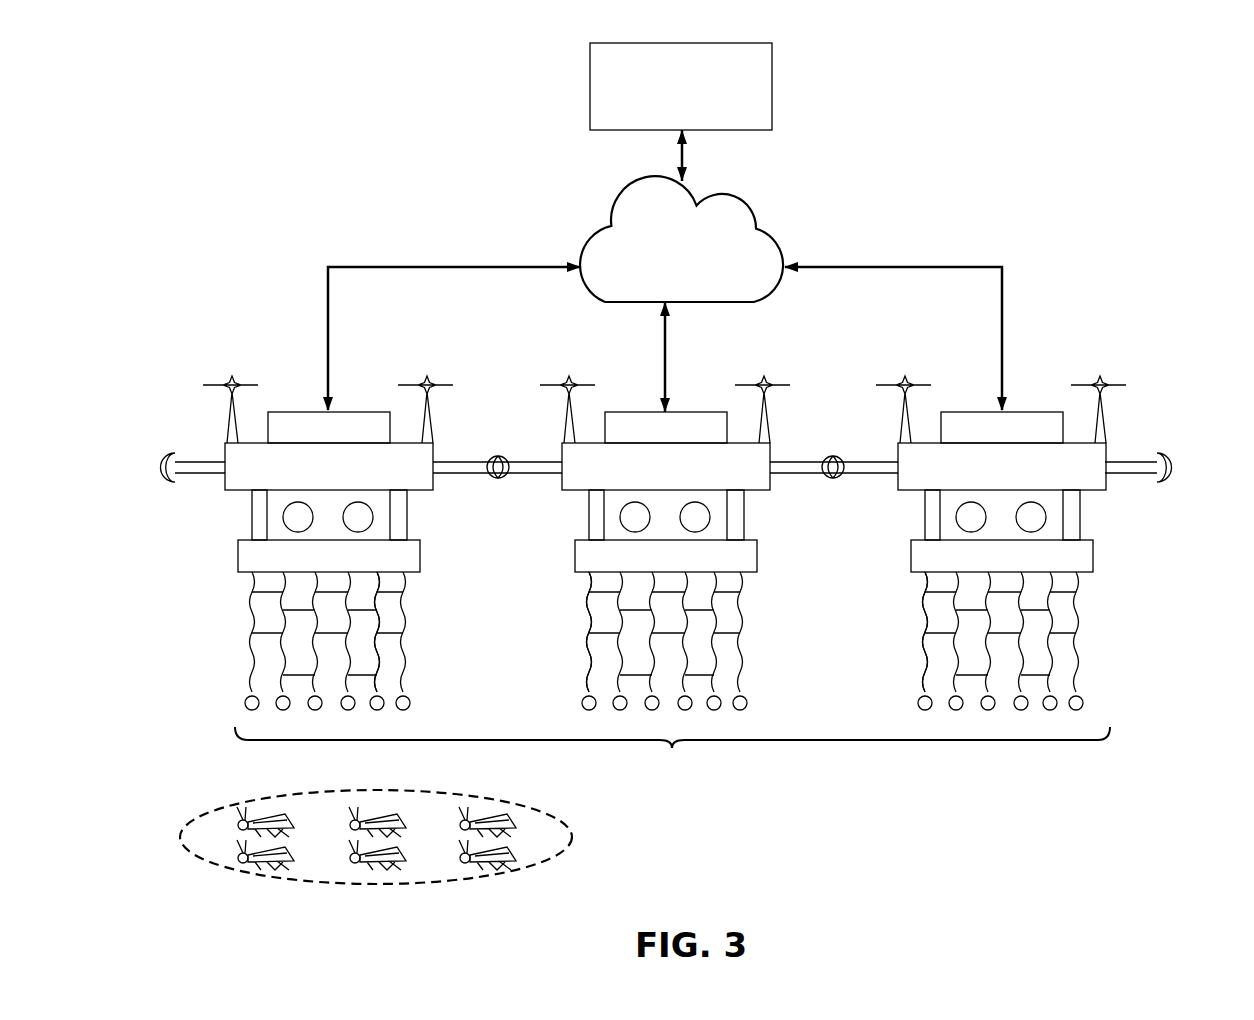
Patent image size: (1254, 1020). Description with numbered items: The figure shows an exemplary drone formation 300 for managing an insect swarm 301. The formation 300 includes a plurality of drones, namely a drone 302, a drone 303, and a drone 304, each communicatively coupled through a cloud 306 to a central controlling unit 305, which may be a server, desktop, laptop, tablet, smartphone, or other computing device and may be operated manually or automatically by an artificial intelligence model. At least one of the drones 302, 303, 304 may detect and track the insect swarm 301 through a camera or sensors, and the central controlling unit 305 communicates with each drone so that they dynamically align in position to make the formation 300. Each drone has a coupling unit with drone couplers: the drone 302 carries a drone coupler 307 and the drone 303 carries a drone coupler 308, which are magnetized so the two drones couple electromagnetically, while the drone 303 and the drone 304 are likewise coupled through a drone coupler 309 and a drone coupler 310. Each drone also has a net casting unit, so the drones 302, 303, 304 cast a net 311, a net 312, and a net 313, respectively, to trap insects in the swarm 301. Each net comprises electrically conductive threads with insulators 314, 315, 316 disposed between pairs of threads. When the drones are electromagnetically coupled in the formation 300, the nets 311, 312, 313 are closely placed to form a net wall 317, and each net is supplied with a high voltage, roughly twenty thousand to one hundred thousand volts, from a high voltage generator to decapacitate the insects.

The drone formation 300 is at (1140, 135).
The insect swarm 301 is at (180, 838).
The drone 302 is at (238, 545).
The drone 303 is at (758, 552).
The drone 304 is at (1093, 558).
The central controlling unit 305 is at (681, 86).
The cloud 306 is at (681, 239).
The drone coupler 307 is at (492, 457).
The drone coupler 308 is at (505, 457).
The drone coupler 309 is at (827, 457).
The drone coupler 310 is at (842, 457).
The net 311 is at (248, 627).
The net 312 is at (742, 633).
The net 313 is at (1077, 633).
The insulator 314 is at (385, 635).
The insulator 315 is at (603, 593).
The insulator 316 is at (935, 635).
The net wall 317 is at (672, 763).